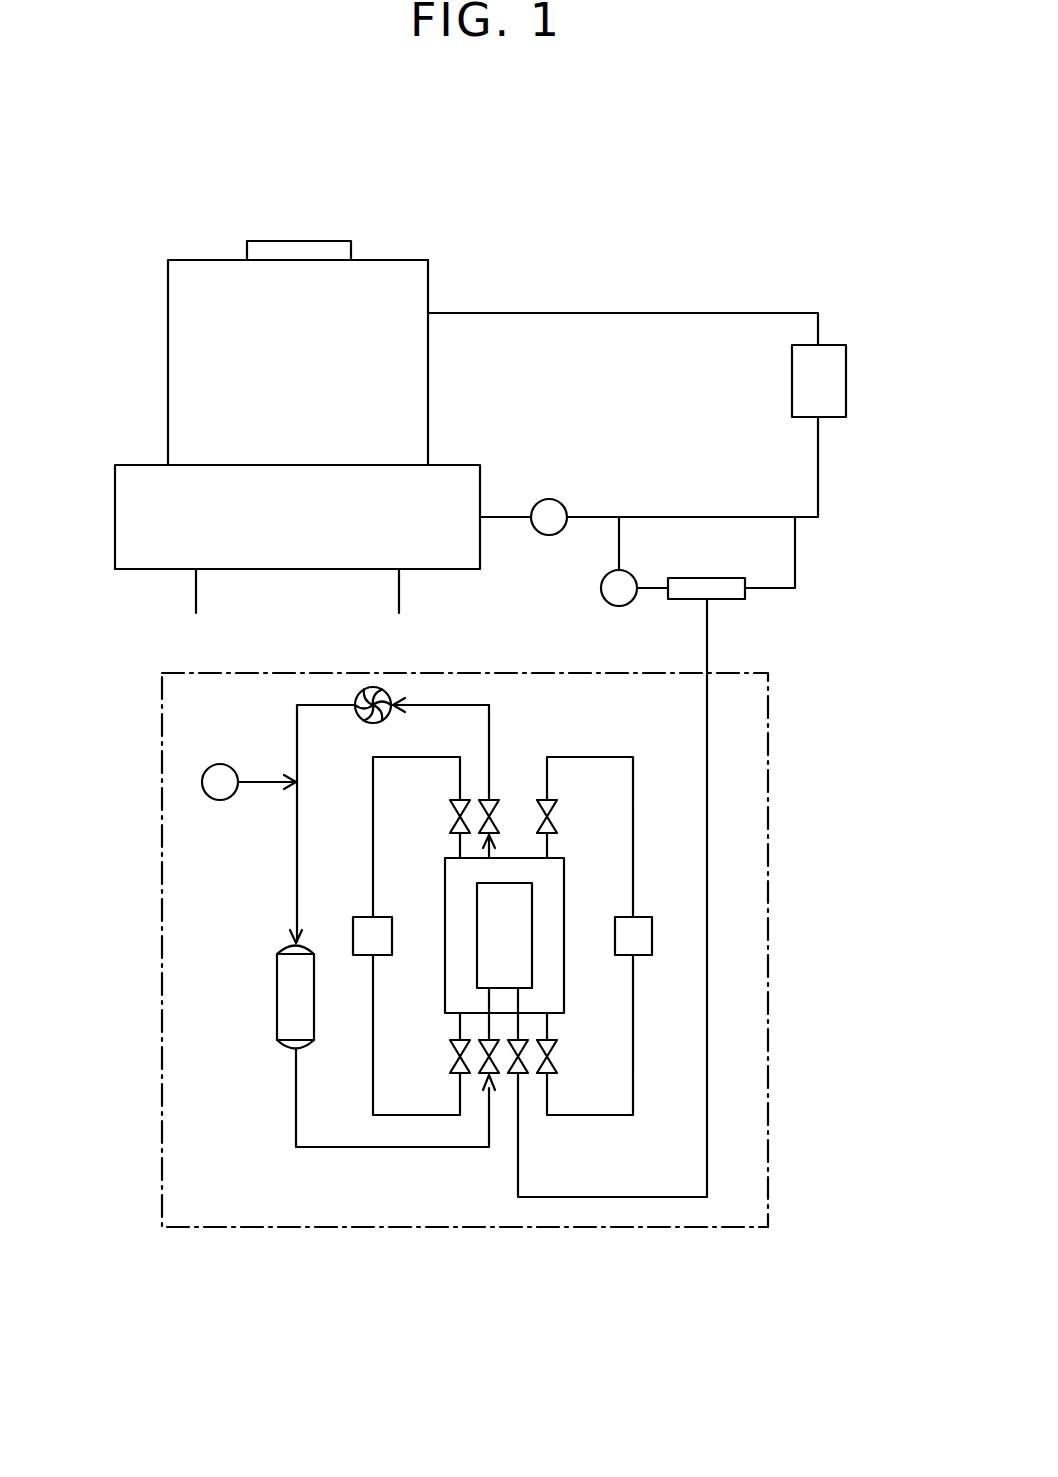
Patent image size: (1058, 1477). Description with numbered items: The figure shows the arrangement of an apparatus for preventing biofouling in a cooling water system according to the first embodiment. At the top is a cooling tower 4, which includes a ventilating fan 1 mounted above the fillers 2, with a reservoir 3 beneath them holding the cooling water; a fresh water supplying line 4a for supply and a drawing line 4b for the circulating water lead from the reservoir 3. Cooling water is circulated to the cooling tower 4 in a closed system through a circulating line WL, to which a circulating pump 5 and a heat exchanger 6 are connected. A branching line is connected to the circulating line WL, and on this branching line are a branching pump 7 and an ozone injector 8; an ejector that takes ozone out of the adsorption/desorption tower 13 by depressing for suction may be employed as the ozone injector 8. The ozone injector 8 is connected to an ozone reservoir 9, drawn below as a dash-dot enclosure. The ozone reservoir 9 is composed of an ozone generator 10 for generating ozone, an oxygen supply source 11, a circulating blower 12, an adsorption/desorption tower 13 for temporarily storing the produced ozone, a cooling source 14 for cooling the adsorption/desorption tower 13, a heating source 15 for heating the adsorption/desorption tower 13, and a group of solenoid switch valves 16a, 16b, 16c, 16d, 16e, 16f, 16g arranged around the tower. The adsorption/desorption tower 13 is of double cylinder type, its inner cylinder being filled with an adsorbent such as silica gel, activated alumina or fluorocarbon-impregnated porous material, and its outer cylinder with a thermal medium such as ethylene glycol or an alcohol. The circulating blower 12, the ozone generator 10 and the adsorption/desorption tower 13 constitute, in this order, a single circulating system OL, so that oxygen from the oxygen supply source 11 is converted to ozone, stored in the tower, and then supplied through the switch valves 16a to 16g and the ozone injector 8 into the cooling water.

The ventilating fan 1 is at (308, 248).
The fillers 2 is at (182, 310).
The reservoir 3 is at (150, 482).
The cooling tower 4 is at (280, 348).
The fresh water supplying line 4a is at (400, 592).
The drawing line 4b is at (195, 590).
The circulating pump 5 is at (543, 528).
The heat exchanger 6 is at (837, 367).
The branching pump 7 is at (608, 595).
The ozone injector 8 is at (718, 592).
The ozone reservoir 9 is at (163, 706).
The ozone generator 10 is at (287, 992).
The oxygen supply source 11 is at (217, 785).
The circulating blower 12 is at (366, 690).
The adsorption/desorption tower 13 is at (564, 883).
The cooling source 14 is at (363, 945).
The heating source 15 is at (640, 935).
The switch valve 16a is at (463, 800).
The switch valve 16b is at (457, 1073).
The switch valve 16c is at (495, 805).
The switch valve 16d is at (485, 1075).
The switch valve 16e is at (557, 823).
The switch valve 16f is at (518, 1075).
The switch valve 16g is at (550, 1075).
The circulating line WL is at (655, 313).
The circulating system OL is at (293, 868).